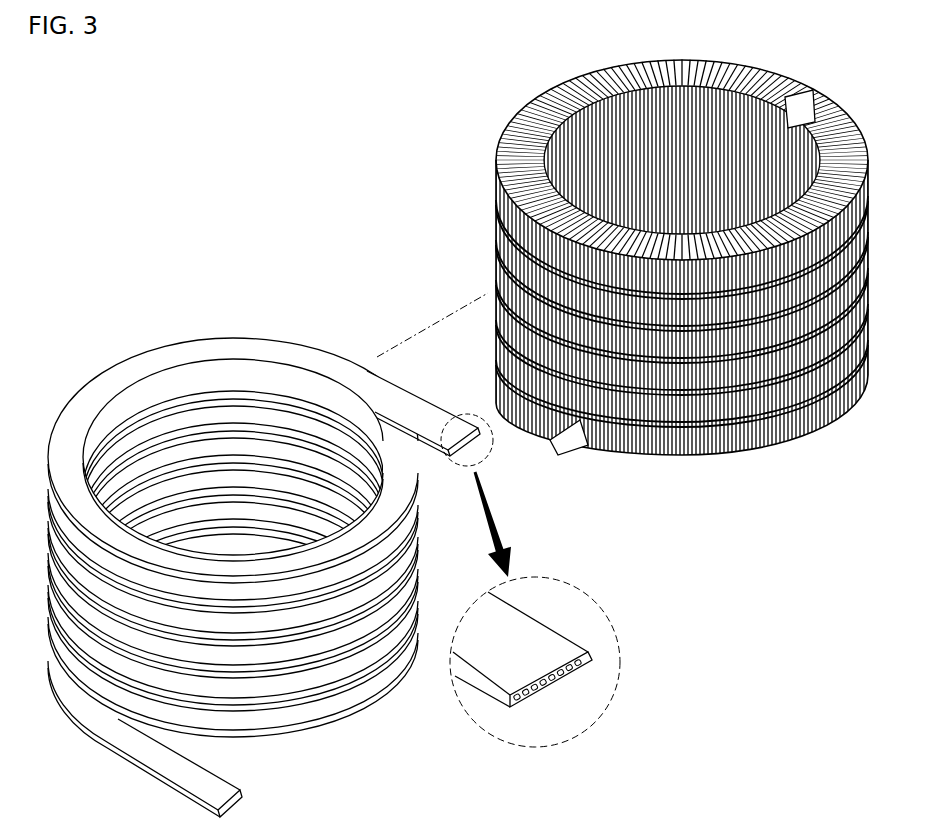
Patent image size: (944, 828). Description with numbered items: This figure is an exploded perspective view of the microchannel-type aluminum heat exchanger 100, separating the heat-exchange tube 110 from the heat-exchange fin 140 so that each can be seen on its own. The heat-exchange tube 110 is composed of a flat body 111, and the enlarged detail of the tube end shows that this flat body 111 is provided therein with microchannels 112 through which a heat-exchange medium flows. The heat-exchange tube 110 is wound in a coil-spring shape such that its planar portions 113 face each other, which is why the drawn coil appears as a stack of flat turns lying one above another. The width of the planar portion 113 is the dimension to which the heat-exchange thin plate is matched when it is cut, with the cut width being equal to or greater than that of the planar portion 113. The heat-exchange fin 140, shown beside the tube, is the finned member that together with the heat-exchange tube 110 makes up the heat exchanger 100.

The microchannel-type aluminum heat exchanger 100 is at (348, 204).
The heat-exchange tube 110 is at (414, 387).
The flat body 111 is at (477, 677).
The microchannels 112 is at (588, 660).
The planar portion 113 is at (538, 632).
The heat-exchange fin 140 is at (496, 197).